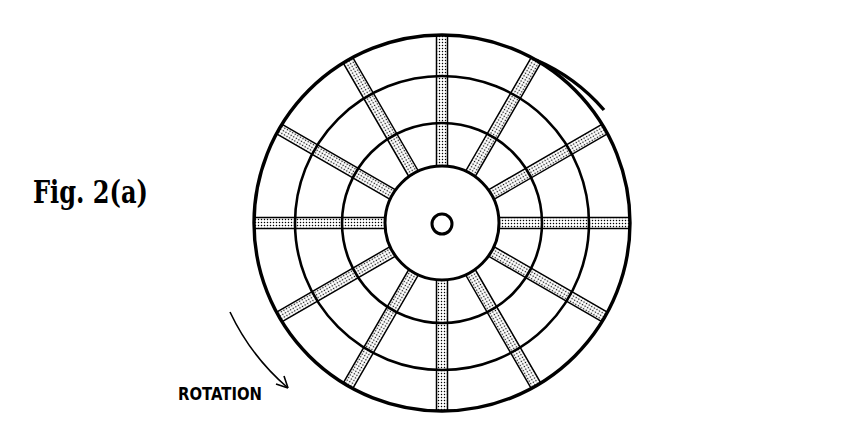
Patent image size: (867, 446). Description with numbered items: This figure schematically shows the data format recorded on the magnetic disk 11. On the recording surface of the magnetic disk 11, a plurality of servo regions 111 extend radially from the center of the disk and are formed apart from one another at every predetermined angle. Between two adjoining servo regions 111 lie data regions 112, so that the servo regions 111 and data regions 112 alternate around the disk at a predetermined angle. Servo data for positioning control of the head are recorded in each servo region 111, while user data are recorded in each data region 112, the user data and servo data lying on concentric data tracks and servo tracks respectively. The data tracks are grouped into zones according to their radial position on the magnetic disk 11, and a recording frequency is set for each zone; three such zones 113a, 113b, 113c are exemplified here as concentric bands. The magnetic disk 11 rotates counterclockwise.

The magnetic disk 11 is at (256, 192).
The servo regions 111 is at (600, 128).
The data regions 112 is at (560, 100).
The zone 113a is at (607, 262).
The zone 113b is at (532, 315).
The zone 113c is at (526, 203).